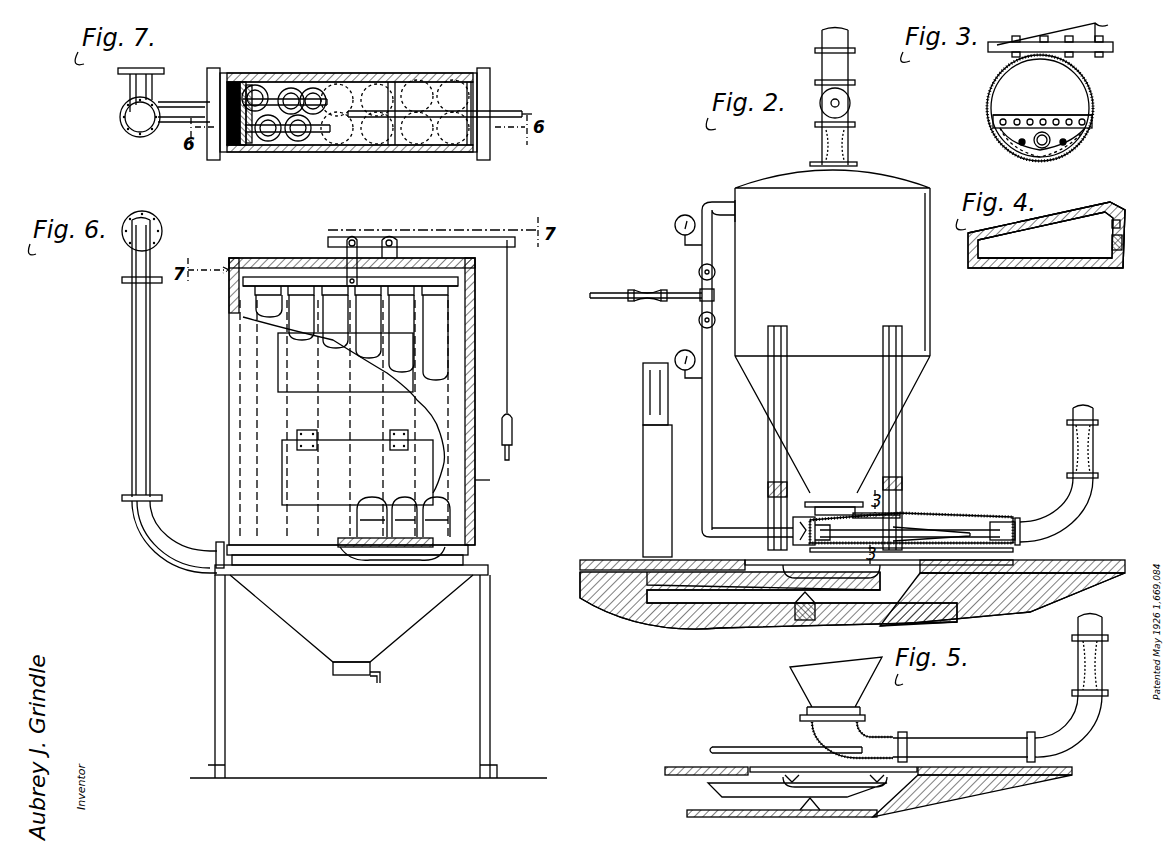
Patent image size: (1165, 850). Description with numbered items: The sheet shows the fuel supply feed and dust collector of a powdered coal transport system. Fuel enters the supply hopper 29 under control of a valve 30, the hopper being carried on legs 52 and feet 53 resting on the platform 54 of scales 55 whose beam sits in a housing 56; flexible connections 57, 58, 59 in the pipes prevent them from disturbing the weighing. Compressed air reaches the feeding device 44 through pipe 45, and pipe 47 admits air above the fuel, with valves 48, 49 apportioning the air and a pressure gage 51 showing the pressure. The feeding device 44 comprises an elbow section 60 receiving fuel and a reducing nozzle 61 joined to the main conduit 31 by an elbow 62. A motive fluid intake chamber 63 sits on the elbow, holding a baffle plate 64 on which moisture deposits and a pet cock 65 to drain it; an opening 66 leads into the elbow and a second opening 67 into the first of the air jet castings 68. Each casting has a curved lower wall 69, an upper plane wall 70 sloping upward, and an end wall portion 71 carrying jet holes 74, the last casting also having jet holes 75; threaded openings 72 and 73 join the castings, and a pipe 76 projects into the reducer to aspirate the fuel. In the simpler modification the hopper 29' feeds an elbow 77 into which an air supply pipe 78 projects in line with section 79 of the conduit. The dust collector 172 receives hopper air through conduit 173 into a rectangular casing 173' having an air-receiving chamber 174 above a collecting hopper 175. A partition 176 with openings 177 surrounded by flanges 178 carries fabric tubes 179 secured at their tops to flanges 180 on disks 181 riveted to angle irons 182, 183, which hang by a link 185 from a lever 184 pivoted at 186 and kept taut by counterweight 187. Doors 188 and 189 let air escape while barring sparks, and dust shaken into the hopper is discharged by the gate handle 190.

In FIG. 2, the supply hopper 29 is at (825, 323).
In FIG. 5, the supply hopper 29' is at (815, 689).
In FIG. 2, the valve 30 is at (856, 103).
In FIG. 2, the main conduit 31 is at (1085, 408).
In FIG. 5, the main conduit 31 is at (1085, 621).
In FIG. 2, the supply feed device 44 is at (880, 516).
In FIG. 3, the supply feed device 44 is at (1096, 89).
In FIG. 2, the pipe 45 is at (712, 483).
In FIG. 2, the pipe 47 is at (722, 208).
In FIG. 2, the valve 48 is at (699, 321).
In FIG. 2, the valve 49 is at (699, 273).
In FIG. 2, the pressure gage 51 is at (676, 218).
In FIG. 2, the legs 52 is at (787, 420).
In FIG. 2, the feet 53 is at (960, 551).
In FIG. 2, the platform 54 is at (760, 551).
In FIG. 2, the scales 55 is at (840, 582).
In FIG. 2, the housing 56 is at (636, 408).
In FIG. 2, the flexible connection 57 is at (847, 139).
In FIG. 2, the flexible connection 58 is at (648, 300).
In FIG. 2, the flexible connection 59 is at (1070, 447).
In FIG. 5, the flexible connection 59 is at (1078, 676).
In FIG. 2, the elbow section 60 is at (870, 515).
In FIG. 3, the elbow section 60 is at (1092, 101).
In FIG. 2, the reducing section or nozzle 61 is at (1000, 522).
In FIG. 2, the elbow 62 is at (1065, 492).
In FIG. 2, the motive fluid intake chamber 63 is at (808, 512).
In FIG. 2, the baffle plate 64 is at (793, 525).
In FIG. 2, the pet cock 65 is at (790, 565).
In FIG. 2, the opening 66 is at (822, 530).
In FIG. 2, the second opening 67 is at (805, 592).
In FIG. 2, the air jet castings 68 is at (812, 535).
In FIG. 3, the air jet castings 68 is at (1005, 113).
In FIG. 4, the air jet castings 68 is at (1096, 206).
In FIG. 3, the lower wall 69 is at (1088, 143).
In FIG. 4, the lower wall 69 is at (1045, 266).
In FIG. 3, the upper plane wall 70 is at (1096, 123).
In FIG. 4, the upper plane wall 70 is at (1085, 219).
In FIG. 3, the end wall portion 71 is at (1020, 124).
In FIG. 4, the end wall portion 71 is at (1115, 213).
In FIG. 4, the interiorly threaded opening 72 is at (970, 251).
In FIG. 3, the interiorly threaded opening 73 is at (1038, 148).
In FIG. 4, the interiorly threaded opening 73 is at (1125, 245).
In FIG. 3, the jet holes 74 is at (1056, 118).
In FIG. 4, the jet holes 74 is at (1125, 216).
In FIG. 3, the jet holes 75 is at (1019, 144).
In FIG. 2, the pipe 76 is at (940, 527).
In FIG. 5, the elbow 77 is at (815, 733).
In FIG. 5, the air supply pipe 78 is at (740, 748).
In FIG. 5, the conduit section 79 is at (975, 740).
In FIG. 7, the dust collector 172 is at (247, 153).
In FIG. 6, the dust collector 172 is at (220, 338).
In FIG. 7, the conduit 173 is at (140, 102).
In FIG. 6, the conduit 173 is at (152, 392).
In FIG. 7, the rectangular casing 173' is at (348, 98).
In FIG. 6, the rectangular casing 173' is at (359, 422).
In FIG. 6, the air-receiving chamber 174 is at (232, 577).
In FIG. 6, the collecting hopper 175 is at (400, 545).
In FIG. 6, the partition 176 is at (483, 553).
In FIG. 6, the openings 177 is at (258, 605).
In FIG. 6, the upstanding flange 178 is at (430, 533).
In FIG. 6, the fabric tubes 179 is at (362, 497).
In FIG. 6, the flange 180 is at (447, 295).
In FIG. 7, the disks 181 is at (317, 88).
In FIG. 6, the disks 181 is at (447, 301).
In FIG. 7, the angle iron 182 is at (273, 143).
In FIG. 6, the angle iron 182 is at (267, 280).
In FIG. 7, the angle iron 183 is at (280, 88).
In FIG. 7, the lever 184 is at (473, 114).
In FIG. 6, the lever 184 is at (477, 219).
In FIG. 7, the link 185 is at (353, 113).
In FIG. 6, the link 185 is at (347, 250).
In FIG. 7, the pivot 186 is at (390, 145).
In FIG. 6, the pivot 186 is at (413, 221).
In FIG. 7, the counterweight 187 is at (537, 114).
In FIG. 6, the counterweight 187 is at (513, 427).
In FIG. 6, the door 188 is at (293, 452).
In FIG. 6, the door 189 is at (307, 365).
In FIG. 6, the gate handle 190 is at (373, 672).